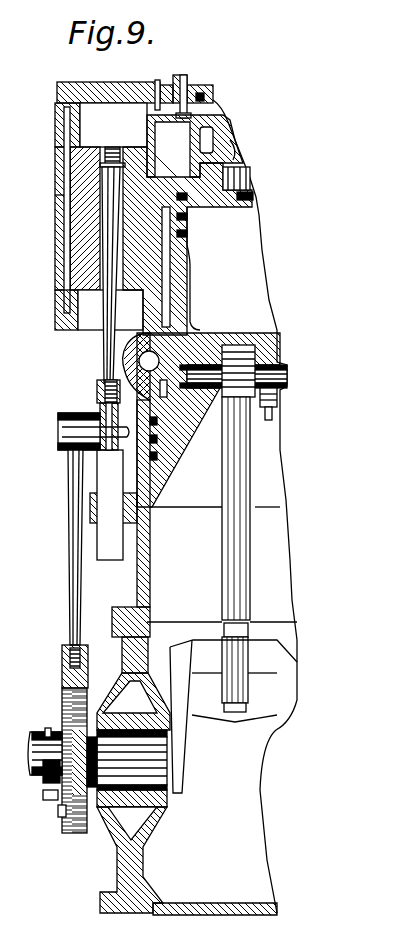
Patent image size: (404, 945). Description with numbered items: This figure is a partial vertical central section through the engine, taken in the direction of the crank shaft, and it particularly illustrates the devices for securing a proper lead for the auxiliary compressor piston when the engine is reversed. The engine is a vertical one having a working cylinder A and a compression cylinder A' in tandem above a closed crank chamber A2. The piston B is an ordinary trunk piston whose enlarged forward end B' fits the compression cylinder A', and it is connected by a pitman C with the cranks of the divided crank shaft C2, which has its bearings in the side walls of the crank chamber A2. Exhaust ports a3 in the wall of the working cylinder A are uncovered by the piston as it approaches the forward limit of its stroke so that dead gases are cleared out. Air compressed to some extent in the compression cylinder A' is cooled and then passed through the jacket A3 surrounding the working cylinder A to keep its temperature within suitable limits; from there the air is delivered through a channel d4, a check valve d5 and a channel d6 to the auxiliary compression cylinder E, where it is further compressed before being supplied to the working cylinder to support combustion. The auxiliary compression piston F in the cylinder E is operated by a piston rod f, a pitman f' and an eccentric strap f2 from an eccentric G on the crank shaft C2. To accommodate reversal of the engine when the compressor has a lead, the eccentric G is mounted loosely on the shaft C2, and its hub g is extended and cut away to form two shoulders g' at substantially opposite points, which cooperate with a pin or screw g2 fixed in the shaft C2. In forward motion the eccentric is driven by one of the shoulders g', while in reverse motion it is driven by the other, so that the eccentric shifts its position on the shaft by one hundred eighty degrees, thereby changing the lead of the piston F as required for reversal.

The auxiliary compression cylinder E is at (107, 124).
The auxiliary compression piston F is at (90, 248).
The piston rod f is at (86, 275).
The channel d6 is at (157, 108).
The check valve d5 is at (193, 93).
The channel d4 is at (195, 146).
The working cylinder A is at (188, 241).
The piston B is at (218, 284).
The jacket A3 is at (178, 305).
The exhaust ports a3 is at (175, 360).
The enlarged forward end B' is at (212, 420).
The compression cylinder A' is at (222, 564).
The pitman C is at (245, 562).
The pitman f' is at (78, 534).
The eccentric G is at (72, 827).
The eccentric strap f2 is at (78, 832).
The crank shaft C2 is at (45, 742).
The hub g is at (34, 782).
The shoulders g' is at (33, 755).
The pin or screw g2 is at (60, 817).
The crank chamber A2 is at (187, 861).